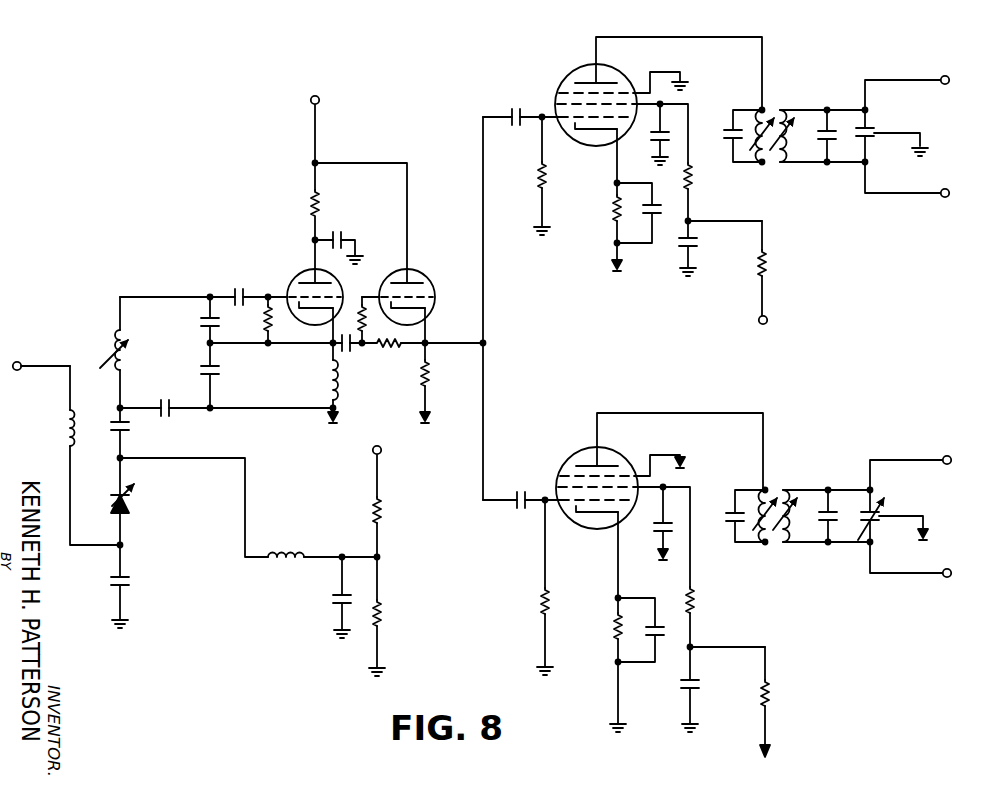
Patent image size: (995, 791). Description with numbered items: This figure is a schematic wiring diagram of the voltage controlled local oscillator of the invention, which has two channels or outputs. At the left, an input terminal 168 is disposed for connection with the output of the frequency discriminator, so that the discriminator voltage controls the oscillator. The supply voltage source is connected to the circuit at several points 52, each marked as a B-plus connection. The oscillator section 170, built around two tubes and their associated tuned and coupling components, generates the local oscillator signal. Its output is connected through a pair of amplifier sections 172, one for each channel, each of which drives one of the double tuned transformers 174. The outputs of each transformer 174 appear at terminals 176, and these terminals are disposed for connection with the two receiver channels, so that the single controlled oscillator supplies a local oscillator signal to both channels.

The input terminal 168 is at (13, 366).
The oscillator section 170 is at (240, 245).
The amplifier sections 172 is at (603, 180).
The double tuned transformers 174 is at (803, 93).
The terminals 176 is at (948, 84).
The points 52 is at (319, 99).